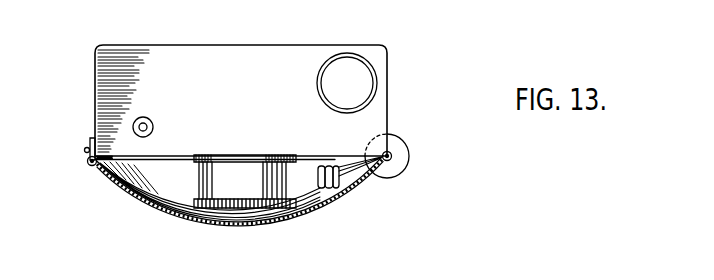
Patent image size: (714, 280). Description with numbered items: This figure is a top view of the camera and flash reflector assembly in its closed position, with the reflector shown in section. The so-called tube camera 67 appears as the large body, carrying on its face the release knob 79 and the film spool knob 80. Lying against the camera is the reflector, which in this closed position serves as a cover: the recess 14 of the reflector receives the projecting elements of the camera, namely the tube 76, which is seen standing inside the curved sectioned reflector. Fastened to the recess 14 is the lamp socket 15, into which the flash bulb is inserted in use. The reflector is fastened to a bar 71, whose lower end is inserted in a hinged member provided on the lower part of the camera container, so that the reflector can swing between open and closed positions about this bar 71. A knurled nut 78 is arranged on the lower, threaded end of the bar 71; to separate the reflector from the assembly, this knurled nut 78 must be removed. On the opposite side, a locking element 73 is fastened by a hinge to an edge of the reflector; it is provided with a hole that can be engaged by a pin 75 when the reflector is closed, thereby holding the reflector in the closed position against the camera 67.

The tube camera 67 is at (118, 66).
The release knob 79 is at (146, 124).
The film spool knob 80 is at (362, 83).
The pin 75 is at (85, 150).
The locking element 73 is at (88, 162).
The recess 14 is at (286, 222).
The tube 76 is at (222, 178).
The bar 71 is at (393, 147).
The knurled nut 78 is at (396, 158).
The lamp socket 15 is at (351, 172).